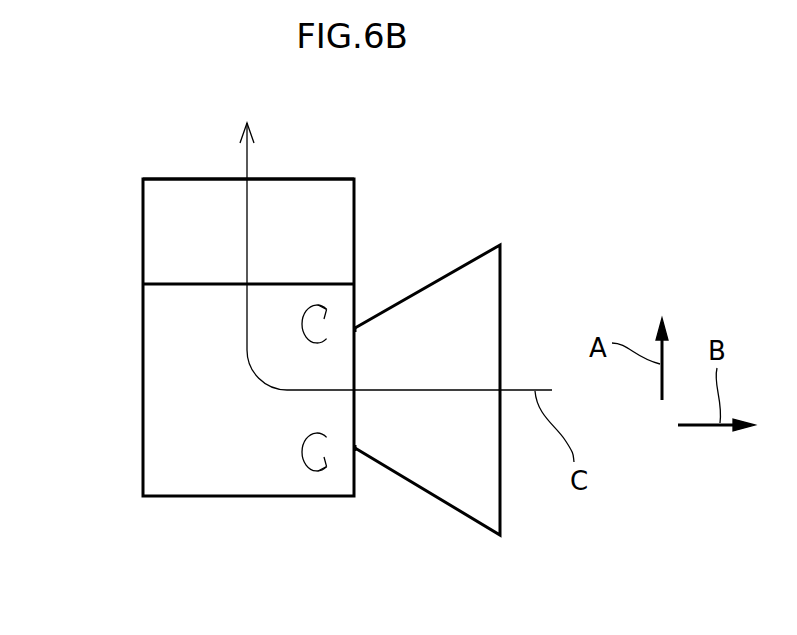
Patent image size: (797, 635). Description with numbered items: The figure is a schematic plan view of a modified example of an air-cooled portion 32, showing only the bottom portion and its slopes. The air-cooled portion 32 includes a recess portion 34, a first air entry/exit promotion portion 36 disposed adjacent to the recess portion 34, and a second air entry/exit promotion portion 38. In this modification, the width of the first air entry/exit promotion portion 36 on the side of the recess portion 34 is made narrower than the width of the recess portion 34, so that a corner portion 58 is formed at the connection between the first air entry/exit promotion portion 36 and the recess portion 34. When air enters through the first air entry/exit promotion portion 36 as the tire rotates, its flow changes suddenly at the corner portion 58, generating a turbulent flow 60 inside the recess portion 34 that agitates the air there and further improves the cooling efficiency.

The air-cooled portion 32 is at (459, 172).
The recess portion 34 is at (211, 497).
The first air entry/exit promotion portion 36 is at (470, 260).
The second air entry/exit promotion portion 38 is at (143, 207).
The corner portion 58 is at (355, 330).
The turbulent flow 60 is at (317, 305).